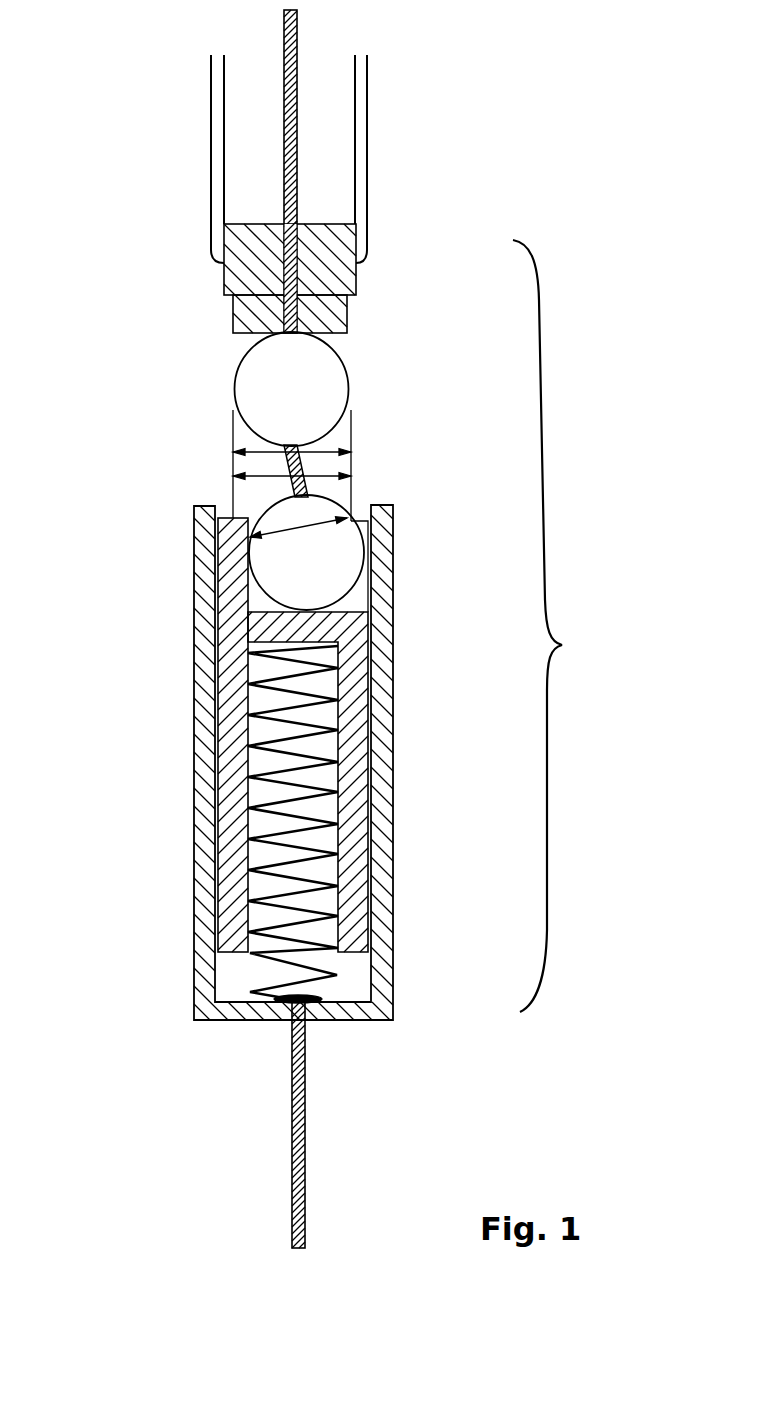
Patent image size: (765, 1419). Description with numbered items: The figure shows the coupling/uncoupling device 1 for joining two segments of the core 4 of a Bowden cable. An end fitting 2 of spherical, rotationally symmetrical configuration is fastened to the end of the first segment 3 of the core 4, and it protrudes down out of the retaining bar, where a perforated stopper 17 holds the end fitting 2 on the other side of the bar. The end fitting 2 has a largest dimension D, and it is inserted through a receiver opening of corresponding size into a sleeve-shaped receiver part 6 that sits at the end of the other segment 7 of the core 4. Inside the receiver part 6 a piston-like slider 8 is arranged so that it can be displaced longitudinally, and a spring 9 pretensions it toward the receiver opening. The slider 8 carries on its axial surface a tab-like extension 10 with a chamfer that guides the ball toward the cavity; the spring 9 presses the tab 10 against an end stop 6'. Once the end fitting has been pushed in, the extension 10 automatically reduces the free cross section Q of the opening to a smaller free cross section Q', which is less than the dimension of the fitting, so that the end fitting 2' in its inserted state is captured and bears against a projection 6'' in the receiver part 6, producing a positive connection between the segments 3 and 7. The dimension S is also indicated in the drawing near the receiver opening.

The coupling/uncoupling device 1 is at (555, 626).
The end fitting 2 is at (334, 384).
The end fitting in the inserted state 2' is at (344, 522).
The first segment of the core 3 is at (288, 157).
The core of the Bowden cable 4 is at (280, 1122).
The receiver part 6 is at (348, 762).
The end stop 6' is at (159, 516).
The projection 6'' is at (409, 537).
The other segment of the core 7 is at (298, 1083).
The piston-like slider 8 is at (353, 695).
The spring 9 is at (318, 789).
The tab-like extension 10 is at (230, 572).
The perforated stopper 17 is at (243, 283).
The largest dimension of the end fitting D is at (270, 463).
The free cross section of the receiver opening Q is at (342, 453).
The reduced free cross section Q' is at (362, 531).
The gap S is at (257, 507).